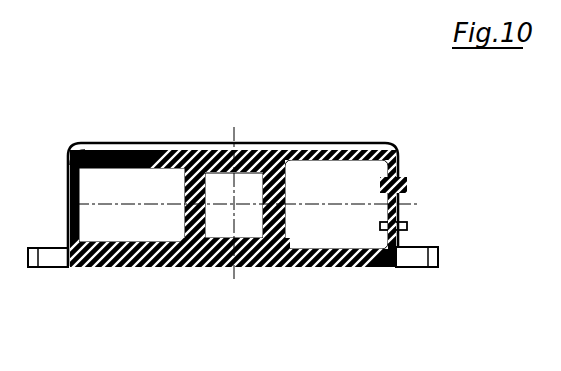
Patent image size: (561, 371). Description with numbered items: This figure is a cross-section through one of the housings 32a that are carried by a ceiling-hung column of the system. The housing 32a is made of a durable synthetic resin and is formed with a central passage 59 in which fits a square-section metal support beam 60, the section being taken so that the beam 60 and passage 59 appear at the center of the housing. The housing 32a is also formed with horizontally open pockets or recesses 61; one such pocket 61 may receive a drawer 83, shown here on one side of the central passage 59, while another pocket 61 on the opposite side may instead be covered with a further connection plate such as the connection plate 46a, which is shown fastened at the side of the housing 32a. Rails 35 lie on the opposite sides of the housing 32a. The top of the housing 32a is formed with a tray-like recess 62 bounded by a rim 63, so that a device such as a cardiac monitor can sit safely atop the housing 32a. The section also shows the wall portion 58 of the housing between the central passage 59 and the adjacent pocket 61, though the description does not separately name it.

The housing 32a is at (403, 145).
The rail 35 is at (56, 258).
The connection plate 46a is at (399, 165).
The central partition block 58 is at (249, 167).
The central passage 59 is at (222, 222).
The support beam 60 is at (214, 177).
The pocket 61 is at (323, 232).
The tray-like recess 62 is at (132, 146).
The rim 63 is at (80, 146).
The drawer 83 is at (133, 236).